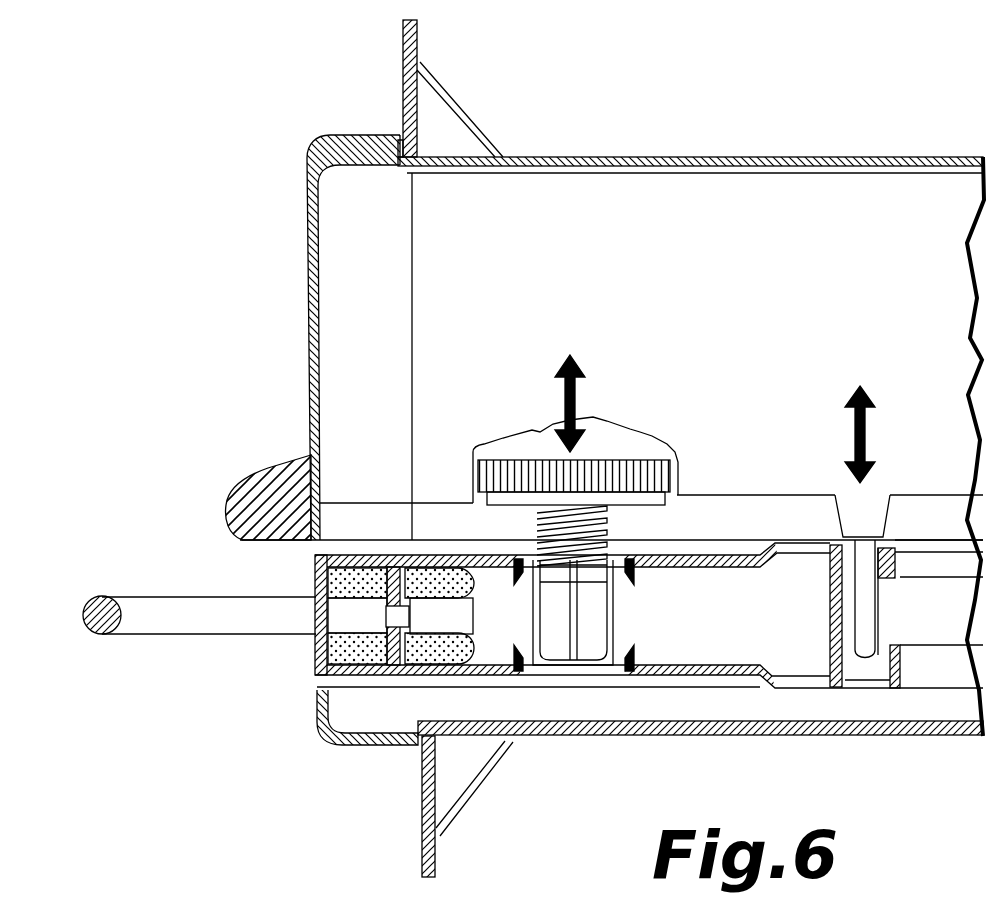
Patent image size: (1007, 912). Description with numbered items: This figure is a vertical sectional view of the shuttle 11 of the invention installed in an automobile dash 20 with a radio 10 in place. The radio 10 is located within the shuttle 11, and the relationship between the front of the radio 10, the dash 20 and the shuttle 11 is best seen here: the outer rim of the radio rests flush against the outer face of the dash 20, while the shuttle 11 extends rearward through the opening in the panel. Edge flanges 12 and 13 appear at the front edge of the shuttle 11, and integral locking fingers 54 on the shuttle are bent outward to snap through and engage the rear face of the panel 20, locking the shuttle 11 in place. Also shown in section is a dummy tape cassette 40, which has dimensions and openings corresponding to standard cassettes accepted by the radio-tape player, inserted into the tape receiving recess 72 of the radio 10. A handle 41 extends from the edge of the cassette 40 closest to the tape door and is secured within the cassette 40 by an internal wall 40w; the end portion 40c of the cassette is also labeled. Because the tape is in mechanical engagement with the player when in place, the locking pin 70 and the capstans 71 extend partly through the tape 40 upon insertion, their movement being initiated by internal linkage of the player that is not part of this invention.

The radio 10 is at (310, 407).
The shuttle 11 is at (770, 157).
The edge flange 12 is at (398, 136).
The edge flange 13 is at (416, 745).
The dash 20 is at (403, 90).
The locking finger 54 is at (448, 92).
The dummy tape cassette 40 is at (316, 565).
The internal wall 40w is at (315, 584).
The tube end cap 40c is at (315, 657).
The handle 41 is at (208, 617).
The locking pin 70 is at (896, 655).
The capstan 71 is at (580, 603).
The tape receiving recess 72 is at (318, 680).